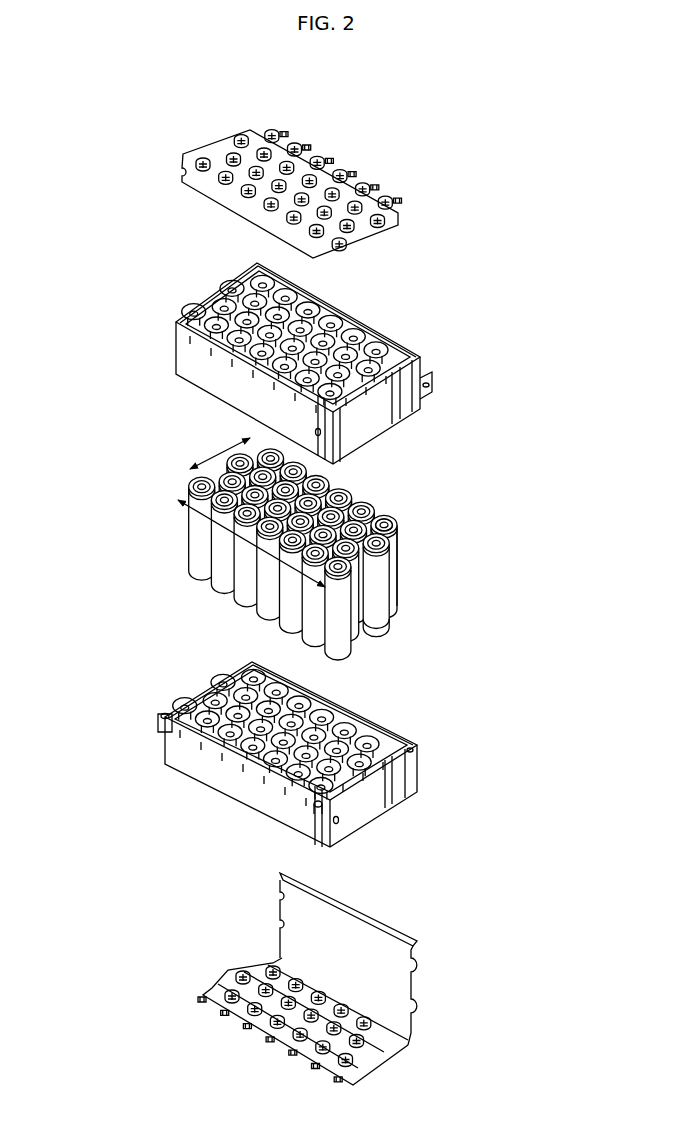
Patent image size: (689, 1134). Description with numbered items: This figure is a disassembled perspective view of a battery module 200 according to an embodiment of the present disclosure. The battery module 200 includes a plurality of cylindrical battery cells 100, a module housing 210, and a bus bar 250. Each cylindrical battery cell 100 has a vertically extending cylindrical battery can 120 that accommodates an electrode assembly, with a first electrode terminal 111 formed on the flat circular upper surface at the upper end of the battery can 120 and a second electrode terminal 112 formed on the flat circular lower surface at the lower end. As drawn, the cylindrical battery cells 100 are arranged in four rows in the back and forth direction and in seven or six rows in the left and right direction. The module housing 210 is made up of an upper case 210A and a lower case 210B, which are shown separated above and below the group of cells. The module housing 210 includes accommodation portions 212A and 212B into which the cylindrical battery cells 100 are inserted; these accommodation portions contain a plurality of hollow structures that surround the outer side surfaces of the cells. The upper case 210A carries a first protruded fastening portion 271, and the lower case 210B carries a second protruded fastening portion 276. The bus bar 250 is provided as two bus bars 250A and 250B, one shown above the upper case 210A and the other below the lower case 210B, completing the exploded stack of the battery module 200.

The battery module 200 is at (150, 75).
The module housing 210 is at (69, 362).
The upper case 210A is at (192, 374).
The lower case 210B is at (178, 768).
The accommodation portion 212A is at (340, 330).
The accommodation portion 212B is at (336, 752).
The bus bar 250 is at (590, 546).
The bus bar 250A is at (371, 141).
The bus bar 250B is at (394, 910).
The first protruded fastening portion 271 is at (431, 388).
The second protruded fastening portion 276 is at (160, 715).
The cylindrical battery cell 100 is at (430, 565).
The first electrode terminal 111 is at (389, 521).
The second electrode terminal 112 is at (378, 630).
The battery can 120 is at (402, 539).